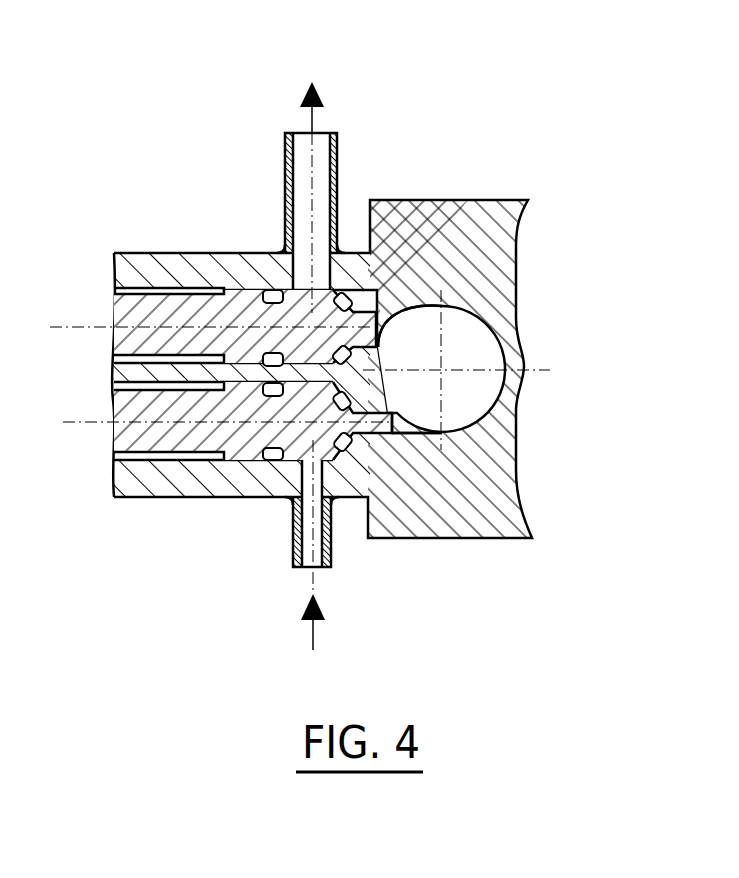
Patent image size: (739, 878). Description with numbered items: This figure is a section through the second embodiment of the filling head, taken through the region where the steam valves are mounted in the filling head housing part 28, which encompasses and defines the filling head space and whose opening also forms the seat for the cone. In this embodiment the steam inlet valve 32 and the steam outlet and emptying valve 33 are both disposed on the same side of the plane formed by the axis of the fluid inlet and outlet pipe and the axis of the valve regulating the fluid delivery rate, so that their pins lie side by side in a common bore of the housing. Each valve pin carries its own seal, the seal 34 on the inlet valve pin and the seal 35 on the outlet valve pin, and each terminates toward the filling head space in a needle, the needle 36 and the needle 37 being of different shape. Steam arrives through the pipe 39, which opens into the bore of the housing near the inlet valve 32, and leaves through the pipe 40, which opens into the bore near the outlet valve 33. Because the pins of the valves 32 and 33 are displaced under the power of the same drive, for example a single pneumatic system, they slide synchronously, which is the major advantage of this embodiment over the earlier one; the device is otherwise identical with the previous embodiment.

The filling head housing part 28 is at (456, 370).
The steam inlet valve 32 is at (133, 432).
The steam outlet and emptying valve 33 is at (133, 318).
The seal 34 is at (355, 462).
The seal 35 is at (346, 297).
The needle 36 is at (383, 440).
The needle 37 is at (377, 308).
The steam inlet pipe 39 is at (330, 557).
The steam outlet pipe 40 is at (338, 143).